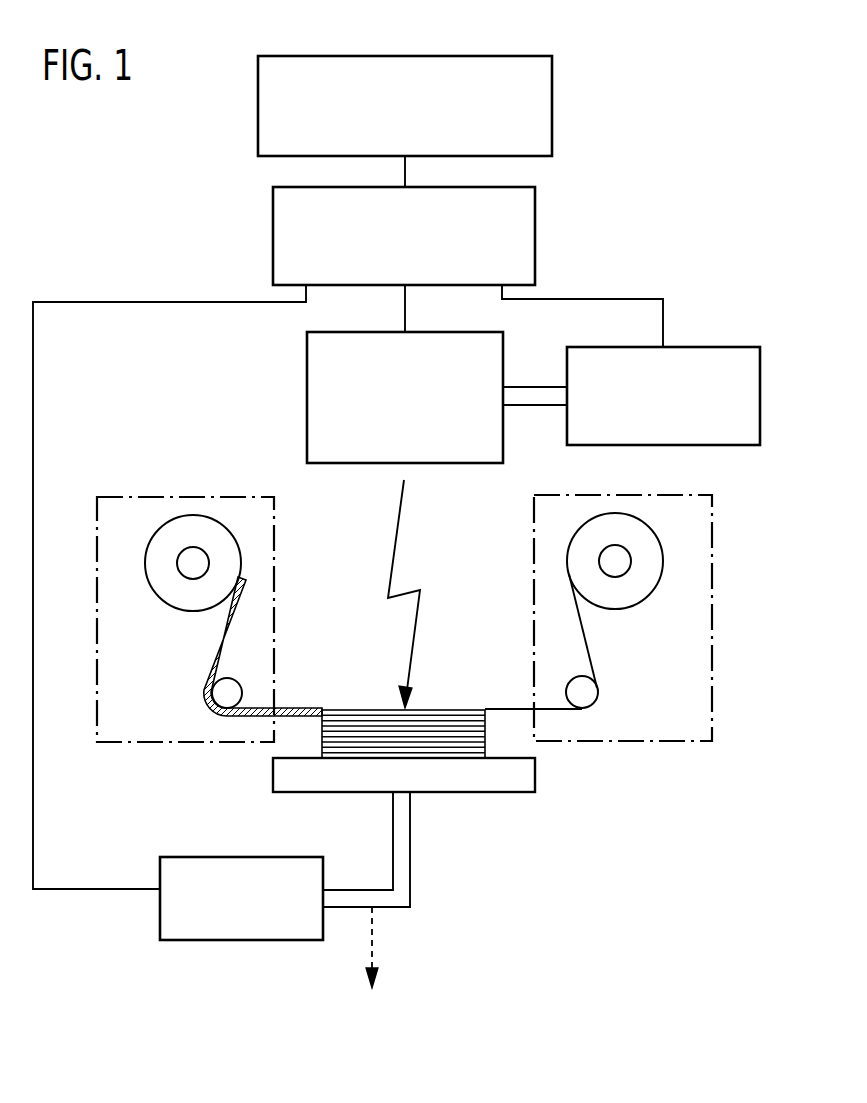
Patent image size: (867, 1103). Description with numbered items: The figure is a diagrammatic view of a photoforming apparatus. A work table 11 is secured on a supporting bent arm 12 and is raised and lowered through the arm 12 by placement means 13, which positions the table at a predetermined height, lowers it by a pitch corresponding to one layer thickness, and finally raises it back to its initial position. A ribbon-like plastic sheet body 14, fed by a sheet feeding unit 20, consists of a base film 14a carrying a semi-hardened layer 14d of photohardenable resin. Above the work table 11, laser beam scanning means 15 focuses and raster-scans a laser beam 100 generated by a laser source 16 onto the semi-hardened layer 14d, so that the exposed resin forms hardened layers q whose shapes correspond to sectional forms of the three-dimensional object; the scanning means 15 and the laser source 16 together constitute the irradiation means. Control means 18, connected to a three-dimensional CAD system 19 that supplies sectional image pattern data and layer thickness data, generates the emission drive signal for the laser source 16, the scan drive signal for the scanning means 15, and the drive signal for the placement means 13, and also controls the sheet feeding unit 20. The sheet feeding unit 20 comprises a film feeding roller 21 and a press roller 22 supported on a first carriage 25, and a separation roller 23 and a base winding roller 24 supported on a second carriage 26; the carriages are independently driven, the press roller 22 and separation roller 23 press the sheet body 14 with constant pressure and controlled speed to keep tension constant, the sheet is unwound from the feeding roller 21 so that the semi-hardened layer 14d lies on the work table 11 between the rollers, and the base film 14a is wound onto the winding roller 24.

The work table 11 is at (517, 783).
The supporting bent arm 12 is at (410, 850).
The placement means 13 is at (268, 857).
The sheet body 14 is at (237, 650).
The base film 14a is at (588, 648).
The semi-hardened layer 14d is at (252, 712).
The laser beam scanning means 15 is at (424, 463).
The laser source 16 is at (697, 347).
The control means 18 is at (528, 220).
The three-dimensional CAD system 19 is at (370, 57).
The sheet feeding unit 20 is at (195, 603).
The film feeding roller 21 is at (195, 560).
The press roller 22 is at (230, 693).
The separation roller 23 is at (583, 690).
The base winding roller 24 is at (615, 558).
The first carriage 25 is at (112, 495).
The second carriage 26 is at (637, 742).
The laser beam 100 is at (393, 566).
The hardened layer q is at (493, 750).